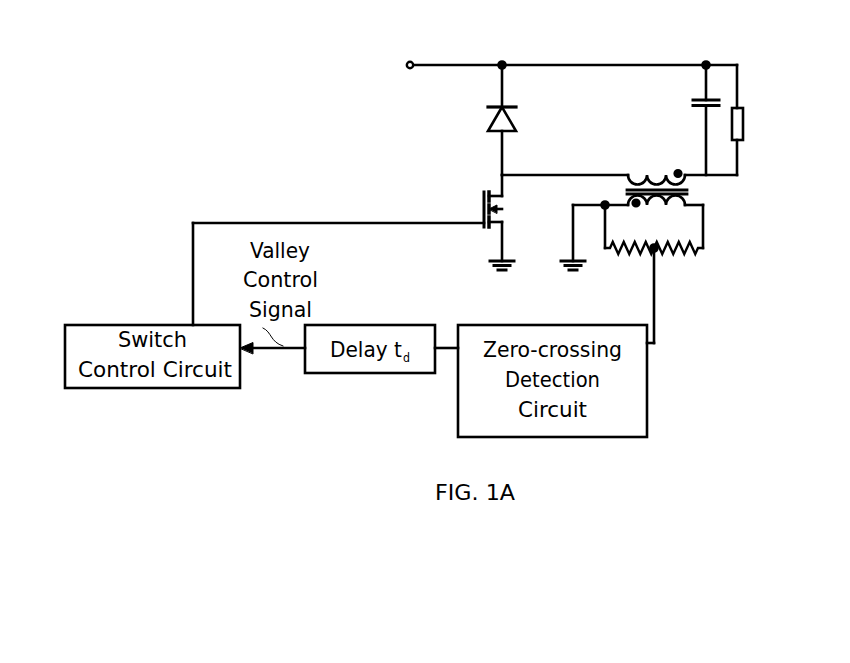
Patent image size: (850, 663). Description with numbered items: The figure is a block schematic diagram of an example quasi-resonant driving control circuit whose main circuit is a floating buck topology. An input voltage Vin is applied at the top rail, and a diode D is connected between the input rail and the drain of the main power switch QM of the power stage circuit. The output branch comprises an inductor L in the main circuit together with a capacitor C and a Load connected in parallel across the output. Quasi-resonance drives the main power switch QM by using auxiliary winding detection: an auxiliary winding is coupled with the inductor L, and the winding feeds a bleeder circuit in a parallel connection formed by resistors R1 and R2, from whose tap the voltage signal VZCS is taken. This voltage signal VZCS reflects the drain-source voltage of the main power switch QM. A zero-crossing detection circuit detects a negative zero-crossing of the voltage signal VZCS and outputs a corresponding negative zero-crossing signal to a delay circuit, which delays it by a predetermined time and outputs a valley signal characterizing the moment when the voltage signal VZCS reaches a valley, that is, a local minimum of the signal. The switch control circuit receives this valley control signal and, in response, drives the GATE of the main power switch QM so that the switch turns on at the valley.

The input voltage terminal Vin is at (391, 66).
The diode D is at (497, 139).
The main power switch QM is at (506, 208).
The gate drive signal line GATE is at (338, 260).
The output capacitor C is at (700, 108).
The load Load is at (744, 112).
The inductor L is at (640, 172).
The first divider resistor R1 is at (626, 256).
The second divider resistor R2 is at (690, 256).
The voltage signal VZCS is at (656, 296).